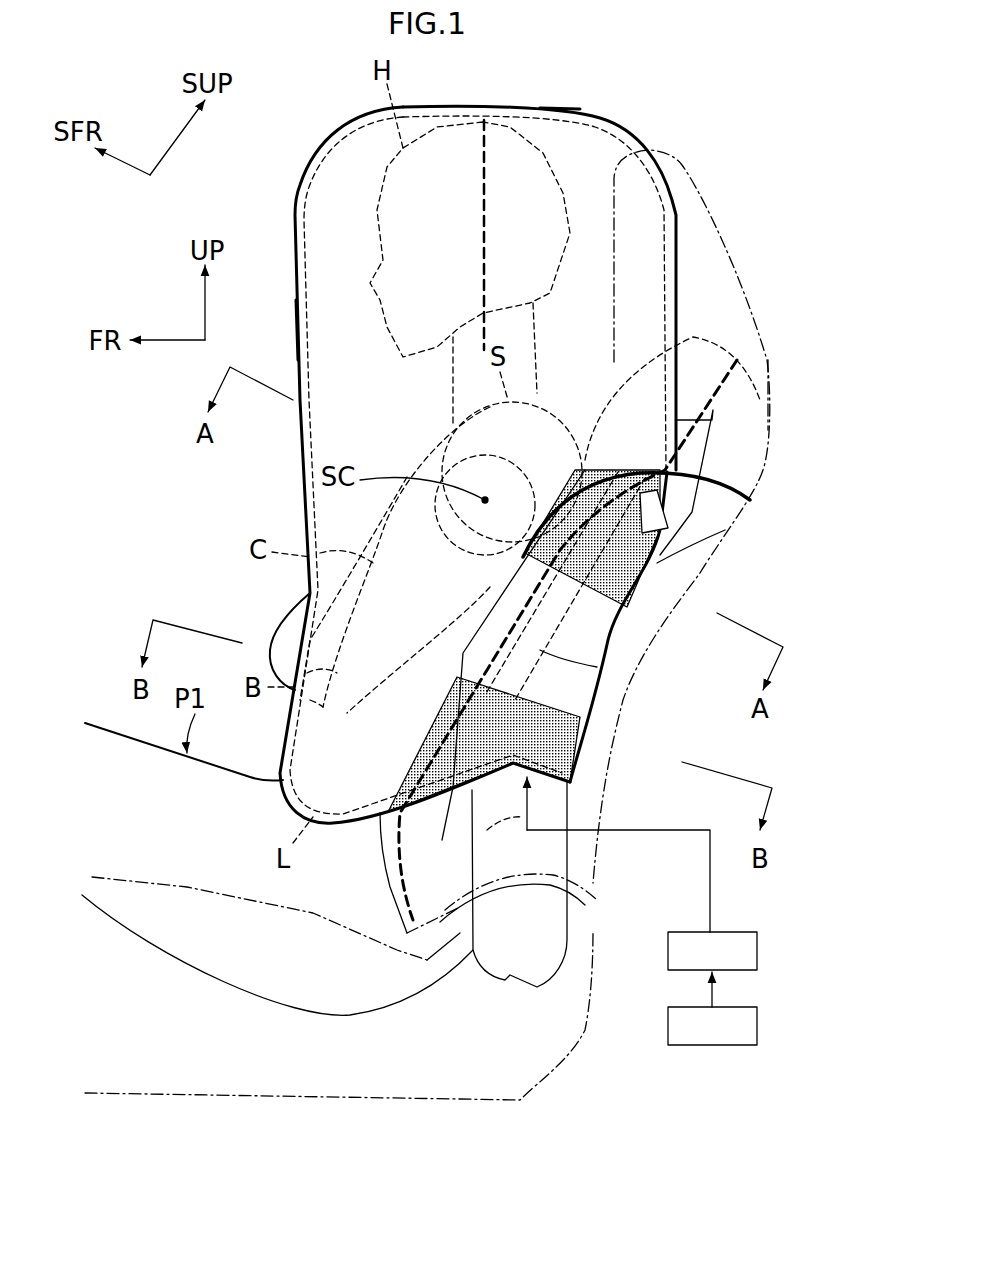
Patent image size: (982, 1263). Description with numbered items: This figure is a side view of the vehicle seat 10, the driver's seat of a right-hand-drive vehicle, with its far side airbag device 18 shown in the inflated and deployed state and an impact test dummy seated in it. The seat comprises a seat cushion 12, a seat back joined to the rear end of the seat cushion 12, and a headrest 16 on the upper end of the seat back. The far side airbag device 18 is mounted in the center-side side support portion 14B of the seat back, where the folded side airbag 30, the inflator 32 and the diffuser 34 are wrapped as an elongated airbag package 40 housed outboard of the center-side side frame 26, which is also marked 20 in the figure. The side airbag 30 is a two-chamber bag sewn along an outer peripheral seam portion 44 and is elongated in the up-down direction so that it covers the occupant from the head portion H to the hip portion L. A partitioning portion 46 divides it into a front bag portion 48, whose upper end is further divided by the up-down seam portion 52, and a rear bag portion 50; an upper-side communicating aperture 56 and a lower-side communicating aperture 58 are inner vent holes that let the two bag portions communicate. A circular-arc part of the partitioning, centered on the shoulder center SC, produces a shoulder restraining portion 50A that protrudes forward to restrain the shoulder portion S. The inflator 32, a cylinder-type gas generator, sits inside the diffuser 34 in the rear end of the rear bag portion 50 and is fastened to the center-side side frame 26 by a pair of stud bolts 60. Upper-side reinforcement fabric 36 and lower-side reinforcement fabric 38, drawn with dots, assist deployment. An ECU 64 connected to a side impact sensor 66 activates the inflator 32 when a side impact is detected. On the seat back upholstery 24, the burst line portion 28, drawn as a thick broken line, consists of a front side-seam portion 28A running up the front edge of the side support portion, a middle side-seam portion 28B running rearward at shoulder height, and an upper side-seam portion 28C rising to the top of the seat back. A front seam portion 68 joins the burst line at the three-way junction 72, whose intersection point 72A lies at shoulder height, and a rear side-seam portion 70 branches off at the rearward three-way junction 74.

The vehicle seat 10 is at (148, 465).
The seat cushion 12 is at (187, 887).
The center-side side support portion 14B is at (823, 382).
The headrest 16 is at (708, 200).
The far side airbag device 18 is at (285, 500).
The inflator 20 is at (567, 807).
The seat back upholstery 24 is at (737, 573).
The center-side side frame 26 is at (629, 854).
The burst line portion 28 is at (517, 612).
The front side-seam portion 28A is at (485, 658).
The middle side-seam portion 28B is at (605, 462).
The upper side-seam portion 28C is at (700, 380).
The far side airbag 30 is at (333, 140).
The inflator 32 is at (640, 655).
The diffuser 34 is at (540, 507).
The upper-side reinforcement fabric 36 is at (660, 565).
The lower-side reinforcement fabric 38 is at (597, 733).
The airbag package 40 is at (400, 847).
The outer peripheral seam portion 44 is at (565, 115).
The partitioning portion 46 is at (455, 538).
The front bag portion 48 is at (330, 340).
The rear bag portion 50 is at (597, 667).
The shoulder restraining portion 50A is at (460, 480).
The seam portion 52 is at (485, 235).
The upper-side communicating aperture 56 is at (622, 407).
The lower-side communicating aperture 58 is at (410, 755).
The stud bolt 60 is at (633, 627).
The ECU 64 is at (760, 950).
The side impact sensor 66 is at (760, 1025).
The front seam portion 68 is at (545, 503).
The rear side-seam portion 70 is at (735, 490).
The three-way junction 72 is at (573, 468).
The intersection point 72A is at (725, 530).
The rearward three-way junction 74 is at (683, 455).